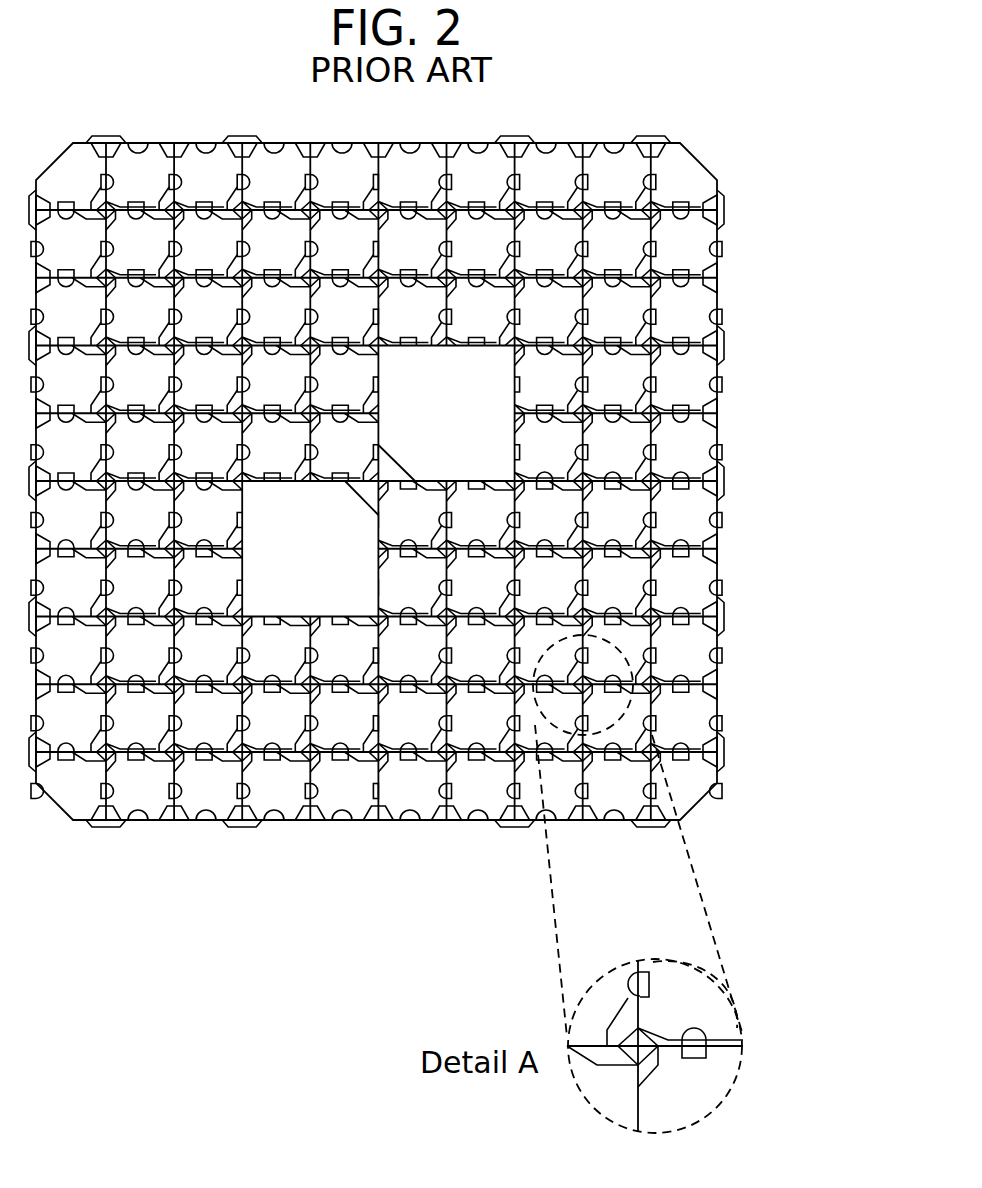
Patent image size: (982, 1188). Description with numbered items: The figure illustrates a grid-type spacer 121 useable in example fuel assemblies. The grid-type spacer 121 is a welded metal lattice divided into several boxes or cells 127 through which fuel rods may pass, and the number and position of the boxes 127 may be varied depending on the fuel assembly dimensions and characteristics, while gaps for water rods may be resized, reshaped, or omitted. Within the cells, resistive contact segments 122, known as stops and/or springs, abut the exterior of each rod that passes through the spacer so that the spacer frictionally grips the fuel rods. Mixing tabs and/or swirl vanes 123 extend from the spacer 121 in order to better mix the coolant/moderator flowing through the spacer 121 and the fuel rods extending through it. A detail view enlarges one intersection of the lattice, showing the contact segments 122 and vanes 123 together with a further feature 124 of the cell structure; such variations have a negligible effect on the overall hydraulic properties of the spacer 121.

The grid-type spacer 121 is at (778, 787).
The resistive contact segment 122 is at (539, 768).
The mixing tabs and/or swirl vanes 123 is at (436, 770).
The diagonal support member 124 is at (653, 1025).
The boxes or cells 127 is at (261, 797).